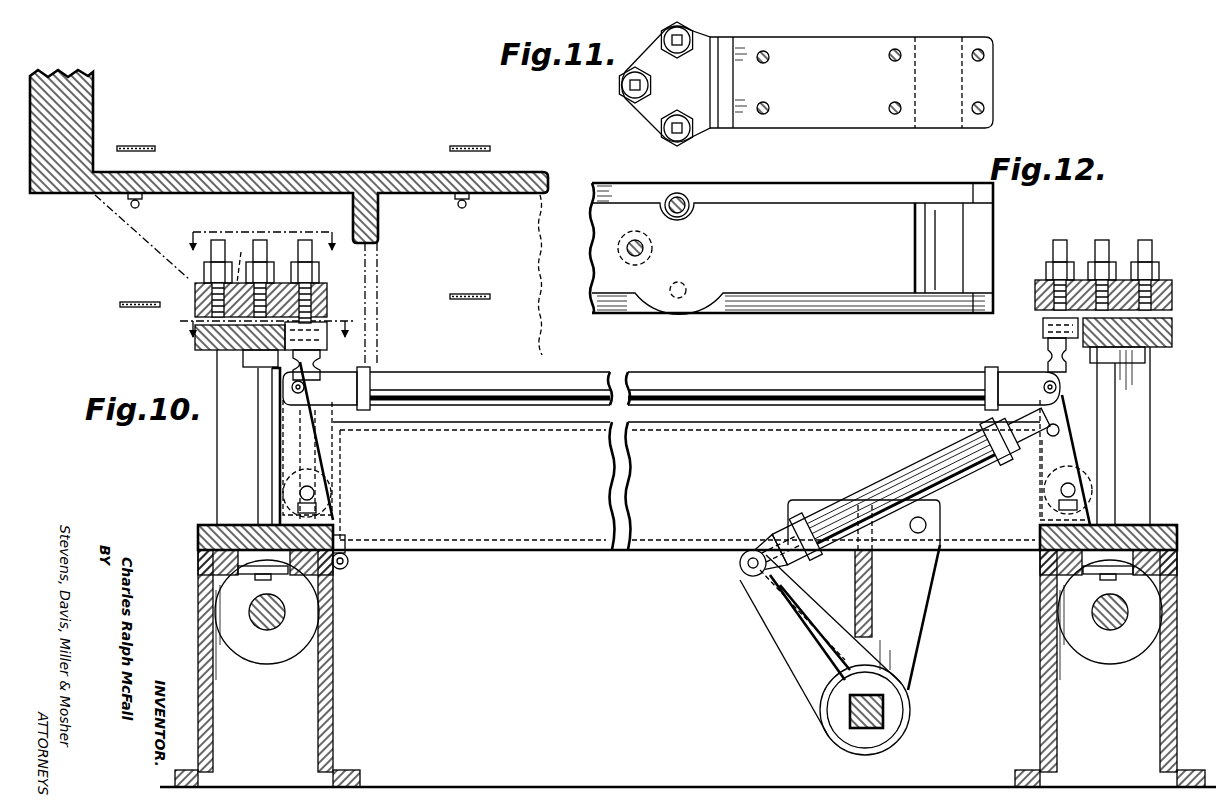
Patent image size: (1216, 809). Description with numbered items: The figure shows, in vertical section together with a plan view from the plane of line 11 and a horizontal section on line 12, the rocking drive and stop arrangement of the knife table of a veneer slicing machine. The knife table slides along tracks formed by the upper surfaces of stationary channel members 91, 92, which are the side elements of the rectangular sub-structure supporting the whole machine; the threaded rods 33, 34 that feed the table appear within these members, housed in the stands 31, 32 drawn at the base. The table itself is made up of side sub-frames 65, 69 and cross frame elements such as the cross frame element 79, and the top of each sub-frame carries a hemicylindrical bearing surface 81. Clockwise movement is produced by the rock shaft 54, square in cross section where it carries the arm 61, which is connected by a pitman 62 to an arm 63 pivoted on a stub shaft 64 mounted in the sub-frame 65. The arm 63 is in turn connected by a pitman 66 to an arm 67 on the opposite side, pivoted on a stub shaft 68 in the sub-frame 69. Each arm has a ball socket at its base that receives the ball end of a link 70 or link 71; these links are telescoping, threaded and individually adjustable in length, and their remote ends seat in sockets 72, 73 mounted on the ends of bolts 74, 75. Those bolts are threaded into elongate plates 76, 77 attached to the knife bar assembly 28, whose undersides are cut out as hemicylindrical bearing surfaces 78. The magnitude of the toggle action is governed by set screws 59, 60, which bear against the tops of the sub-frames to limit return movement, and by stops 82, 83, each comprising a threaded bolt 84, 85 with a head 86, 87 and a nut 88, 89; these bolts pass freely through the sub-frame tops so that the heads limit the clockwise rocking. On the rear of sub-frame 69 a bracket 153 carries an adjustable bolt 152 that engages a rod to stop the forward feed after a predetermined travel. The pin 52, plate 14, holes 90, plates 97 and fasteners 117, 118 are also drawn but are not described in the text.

In FIG. 10, the section line 11— 11 is at (264, 246).
In FIG. 10, the section line 12— 12 is at (257, 318).
In FIG. 10, the clamp plate 14 is at (325, 292).
In FIG. 10, the knife bar assembly 28 is at (300, 172).
In FIG. 10, the left bearing stand 31 is at (199, 537).
In FIG. 10, the right bearing stand 32 is at (1177, 536).
In FIG. 10, the threaded rod 33 is at (279, 630).
In FIG. 10, the threaded rod 34 is at (1113, 628).
In FIG. 12, the pivot pin 52 is at (632, 241).
In FIG. 10, the rock shaft 54 is at (882, 710).
In FIG. 10, the set screw 59 is at (217, 240).
In FIG. 11, the set screw 59 is at (665, 136).
In FIG. 12, the set screw 59 is at (675, 302).
In FIG. 10, the set screw 60 is at (1153, 248).
In FIG. 10, the arm 61 is at (800, 672).
In FIG. 10, the pitman 62 is at (898, 480).
In FIG. 10, the arm 63 is at (1082, 452).
In FIG. 10, the stub shaft 64 is at (1060, 497).
In FIG. 10, the sub-frame 65 is at (1130, 506).
In FIG. 10, the pitman 66 is at (820, 384).
In FIG. 10, the arm 67 is at (285, 450).
In FIG. 10, the stub shaft 68 is at (316, 490).
In FIG. 10, the sub-frame 69 is at (250, 490).
In FIG. 12, the sub-frame 69 is at (784, 295).
In FIG. 10, the link 70 is at (328, 366).
In FIG. 10, the link 71 is at (1048, 358).
In FIG. 10, the socket 72 is at (340, 340).
In FIG. 12, the socket 72 is at (663, 202).
In FIG. 10, the socket 73 is at (1043, 327).
In FIG. 11, the bolt 74 is at (666, 38).
In FIG. 12, the bolt 74 is at (682, 199).
In FIG. 10, the bolt 75 is at (1037, 287).
In FIG. 10, the elongate plate 76 is at (196, 296).
In FIG. 11, the elongate plate 76 is at (815, 128).
In FIG. 10, the elongate plate 77 is at (1173, 297).
In FIG. 11, the hemicylindrical bearing surface 78 is at (964, 87).
In FIG. 10, the cross frame element 79 is at (560, 530).
In FIG. 12, the hemicylindrical bearing surface 81 is at (958, 241).
In FIG. 10, the stop 82 is at (262, 241).
In FIG. 11, the stop 82 is at (633, 95).
In FIG. 10, the stop 83 is at (1110, 262).
In FIG. 10, the threaded bolt 84 is at (239, 260).
In FIG. 12, the threaded bolt 84 is at (620, 250).
In FIG. 10, the threaded bolt 85 is at (1122, 292).
In FIG. 10, the bolt head 86 is at (256, 368).
In FIG. 12, the bolt head 86 is at (631, 268).
In FIG. 10, the bolt head 87 is at (1148, 366).
In FIG. 10, the nut 88 is at (306, 241).
In FIG. 11, the nut 88 is at (620, 89).
In FIG. 10, the nut 89 is at (1085, 262).
In FIG. 11, the holes 90 is at (766, 103).
In FIG. 10, the channel member 91 is at (333, 656).
In FIG. 10, the channel member 92 is at (1177, 641).
In FIG. 10, the stop plate 97 is at (303, 226).
In FIG. 10, the bolt 117 is at (138, 207).
In FIG. 10, the guide line 118 is at (118, 212).
In FIG. 10, the bolt 152 is at (345, 570).
In FIG. 10, the bracket 153 is at (349, 562).